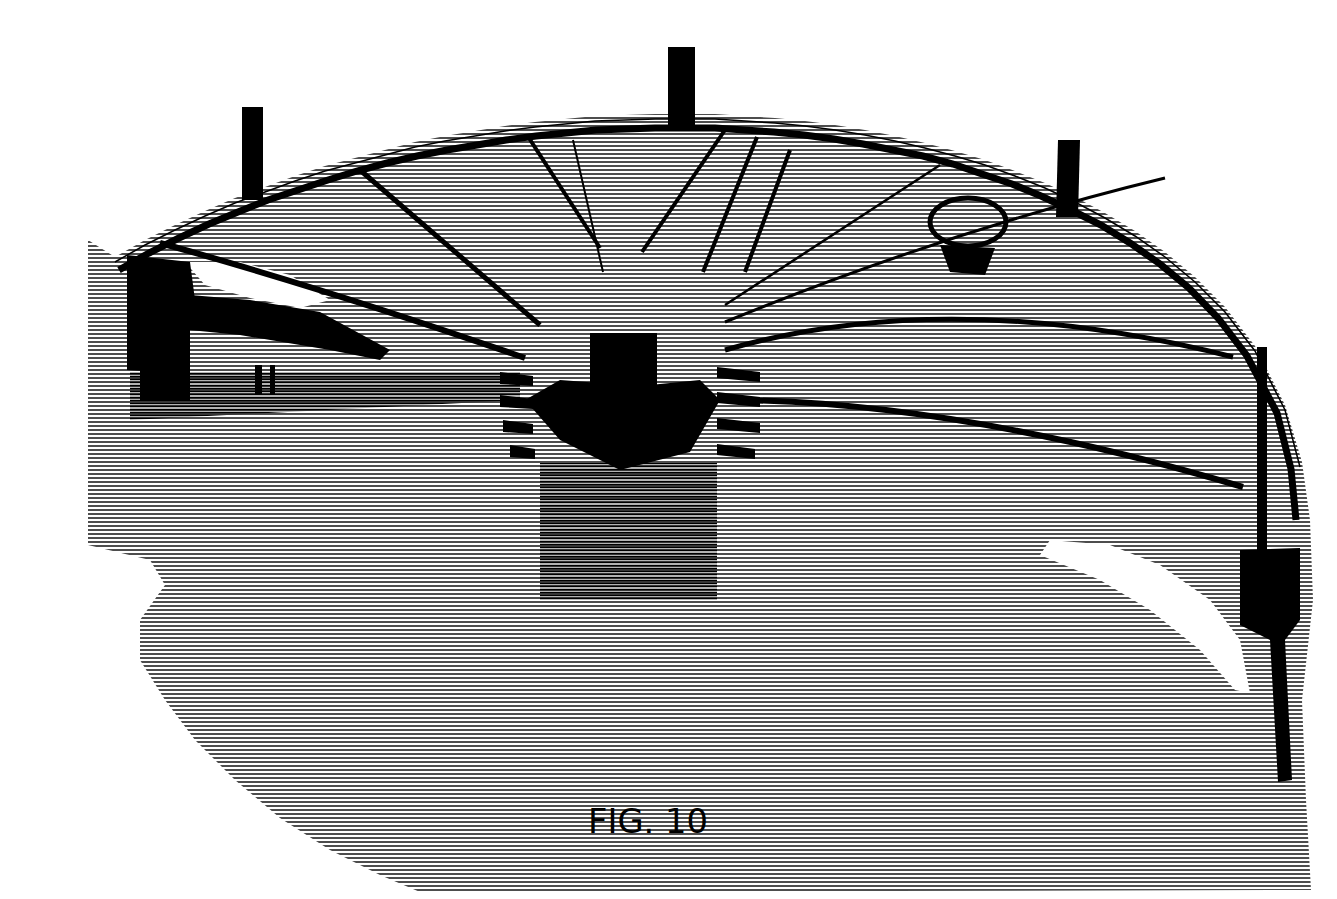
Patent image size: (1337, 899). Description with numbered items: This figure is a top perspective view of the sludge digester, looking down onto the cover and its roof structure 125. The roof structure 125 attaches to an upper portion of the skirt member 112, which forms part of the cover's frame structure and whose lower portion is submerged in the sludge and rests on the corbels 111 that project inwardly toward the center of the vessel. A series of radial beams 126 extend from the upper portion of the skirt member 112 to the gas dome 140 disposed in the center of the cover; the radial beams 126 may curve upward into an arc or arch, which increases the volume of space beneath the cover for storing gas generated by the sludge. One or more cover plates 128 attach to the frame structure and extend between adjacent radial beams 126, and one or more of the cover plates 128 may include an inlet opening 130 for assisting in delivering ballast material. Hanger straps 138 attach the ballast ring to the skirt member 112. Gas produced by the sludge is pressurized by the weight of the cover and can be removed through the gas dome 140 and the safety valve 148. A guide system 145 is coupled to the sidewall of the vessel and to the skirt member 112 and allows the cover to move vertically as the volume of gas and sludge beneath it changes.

The corbels 111 is at (367, 365).
The skirt member 112 is at (152, 293).
The roof structure 125 is at (757, 137).
The radial beams 126 is at (593, 240).
The cover plates 128 is at (350, 238).
The inlet opening 130 is at (1192, 398).
The hanger straps 138 is at (218, 330).
The gas dome 140 is at (693, 333).
The guide system 145 is at (1055, 158).
The safety valve 148 is at (857, 288).